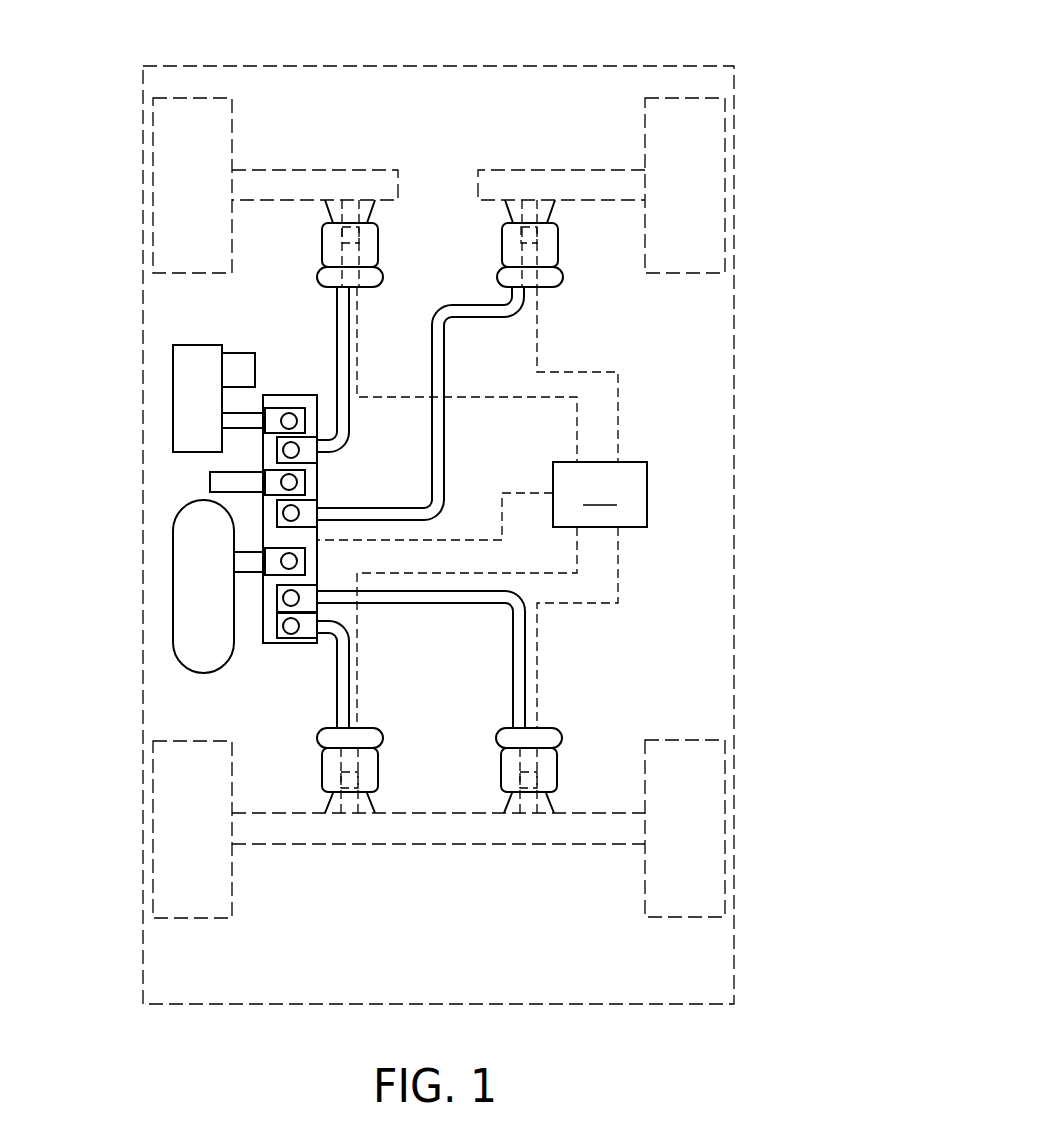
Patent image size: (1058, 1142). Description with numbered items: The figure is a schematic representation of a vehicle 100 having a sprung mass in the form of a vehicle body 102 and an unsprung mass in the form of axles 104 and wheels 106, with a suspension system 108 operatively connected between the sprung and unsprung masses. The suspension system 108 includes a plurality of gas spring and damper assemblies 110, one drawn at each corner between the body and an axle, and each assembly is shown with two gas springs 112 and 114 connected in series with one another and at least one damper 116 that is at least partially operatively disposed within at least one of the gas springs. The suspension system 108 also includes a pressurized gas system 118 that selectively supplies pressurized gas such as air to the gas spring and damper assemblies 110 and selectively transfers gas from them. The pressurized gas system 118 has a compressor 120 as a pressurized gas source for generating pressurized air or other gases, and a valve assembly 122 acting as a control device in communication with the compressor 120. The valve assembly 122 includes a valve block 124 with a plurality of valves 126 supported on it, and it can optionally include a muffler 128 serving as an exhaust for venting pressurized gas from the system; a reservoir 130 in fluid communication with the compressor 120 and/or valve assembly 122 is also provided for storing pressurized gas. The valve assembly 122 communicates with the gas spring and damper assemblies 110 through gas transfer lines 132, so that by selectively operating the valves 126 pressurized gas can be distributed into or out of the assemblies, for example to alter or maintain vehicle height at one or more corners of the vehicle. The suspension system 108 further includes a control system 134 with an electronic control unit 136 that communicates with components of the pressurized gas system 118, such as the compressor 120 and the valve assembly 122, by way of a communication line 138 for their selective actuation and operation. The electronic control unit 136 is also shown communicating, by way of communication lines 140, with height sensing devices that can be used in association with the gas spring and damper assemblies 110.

The vehicle 100 is at (772, 122).
The vehicle body 102 is at (612, 66).
The axles 104 is at (292, 183).
The wheels 106 is at (178, 187).
The suspension system 108 is at (748, 296).
The gas spring and damper assemblies 110 is at (474, 506).
The gas spring 112 is at (555, 278).
The gas spring 114 is at (545, 232).
The damper 116 is at (540, 262).
The pressurized gas system 118 is at (165, 472).
The compressor 120 is at (185, 397).
The valve assembly 122 is at (312, 498).
The valve block 124 is at (298, 648).
The valves 126 is at (298, 512).
The muffler 128 is at (210, 481).
The reservoir 130 is at (200, 550).
The gas transfer lines 132 is at (432, 359).
The control system 134 is at (655, 457).
The electronic control unit 136 is at (600, 494).
The communication line 138 is at (525, 492).
The communication lines 140 is at (538, 352).